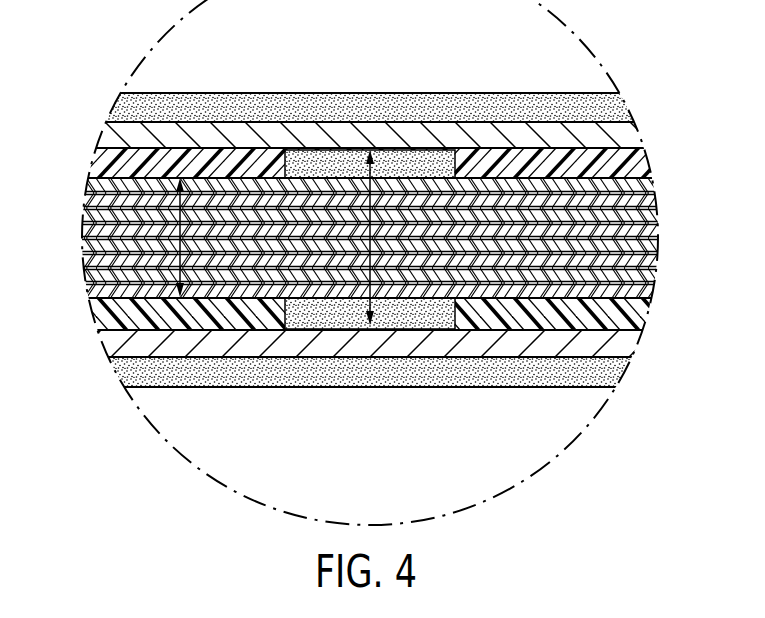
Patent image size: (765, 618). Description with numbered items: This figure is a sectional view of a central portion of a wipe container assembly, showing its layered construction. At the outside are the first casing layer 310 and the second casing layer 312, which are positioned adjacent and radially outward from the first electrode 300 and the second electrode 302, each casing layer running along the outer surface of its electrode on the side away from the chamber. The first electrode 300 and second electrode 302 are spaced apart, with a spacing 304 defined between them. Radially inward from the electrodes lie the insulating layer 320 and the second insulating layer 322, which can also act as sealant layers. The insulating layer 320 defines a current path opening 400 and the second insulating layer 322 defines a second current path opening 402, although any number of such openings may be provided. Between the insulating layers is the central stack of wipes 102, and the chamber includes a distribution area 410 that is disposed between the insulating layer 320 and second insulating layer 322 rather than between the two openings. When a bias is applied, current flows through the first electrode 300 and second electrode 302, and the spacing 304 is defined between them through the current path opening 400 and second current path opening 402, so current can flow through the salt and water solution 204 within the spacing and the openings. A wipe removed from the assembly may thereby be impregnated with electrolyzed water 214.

The wipes 102 is at (95, 202).
The salt and water solution 204 is at (360, 244).
The electrolyzed water 214 is at (376, 244).
The first electrode 300 is at (635, 135).
The second electrode 302 is at (632, 340).
The spacing 304 is at (347, 175).
The first casing layer 310 is at (620, 103).
The second casing layer 312 is at (620, 370).
The insulating layer 320 is at (640, 165).
The second insulating layer 322 is at (633, 308).
The current path opening 400 is at (408, 153).
The second current path opening 402 is at (425, 322).
The distribution area 410 is at (178, 245).